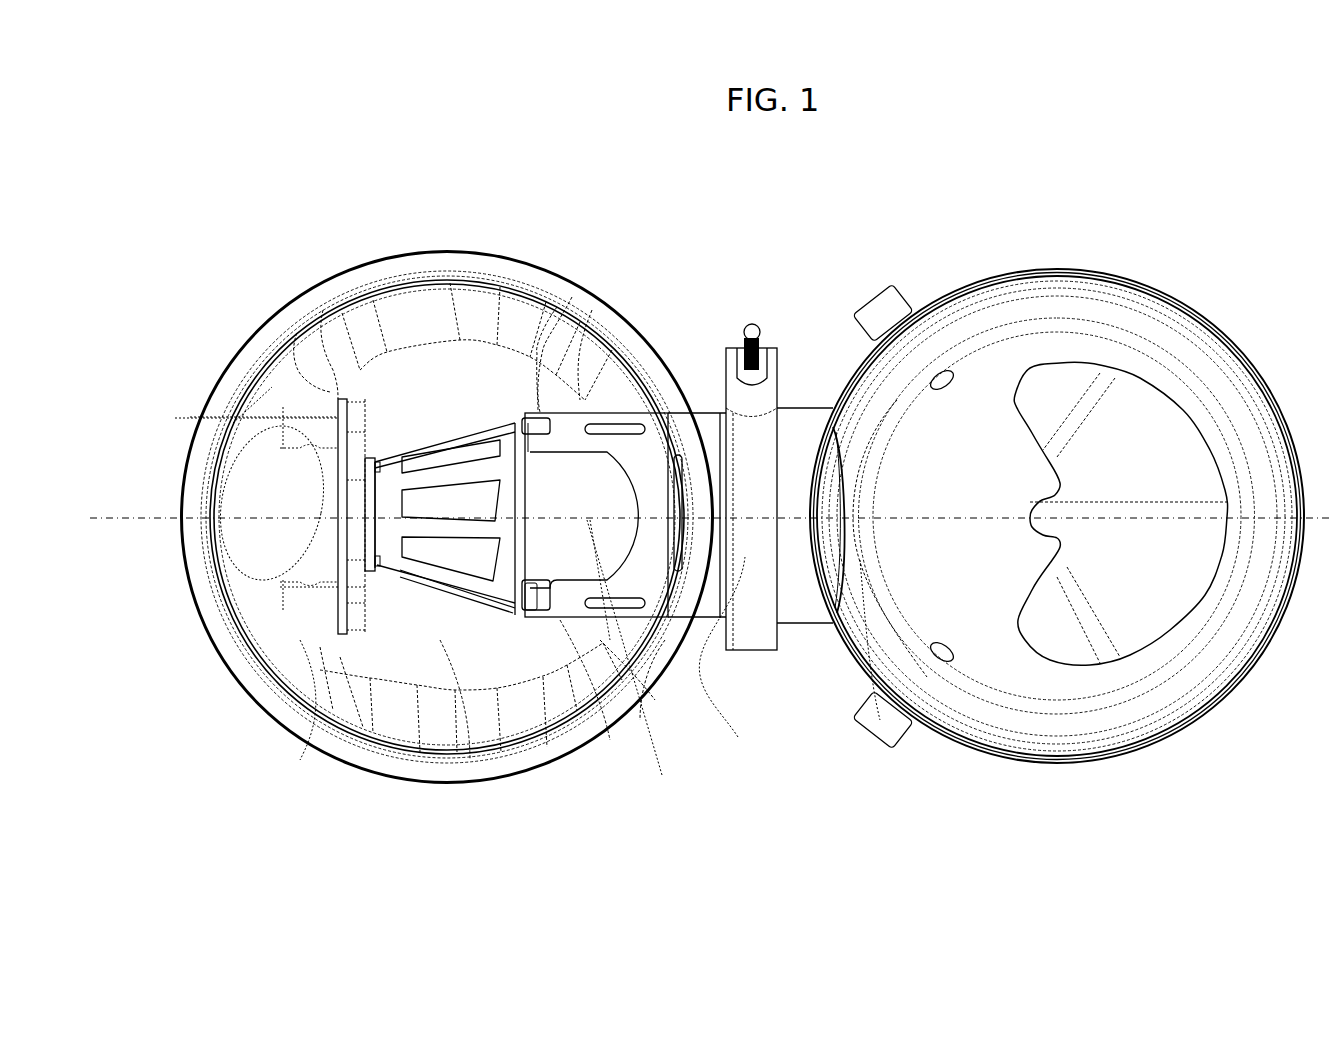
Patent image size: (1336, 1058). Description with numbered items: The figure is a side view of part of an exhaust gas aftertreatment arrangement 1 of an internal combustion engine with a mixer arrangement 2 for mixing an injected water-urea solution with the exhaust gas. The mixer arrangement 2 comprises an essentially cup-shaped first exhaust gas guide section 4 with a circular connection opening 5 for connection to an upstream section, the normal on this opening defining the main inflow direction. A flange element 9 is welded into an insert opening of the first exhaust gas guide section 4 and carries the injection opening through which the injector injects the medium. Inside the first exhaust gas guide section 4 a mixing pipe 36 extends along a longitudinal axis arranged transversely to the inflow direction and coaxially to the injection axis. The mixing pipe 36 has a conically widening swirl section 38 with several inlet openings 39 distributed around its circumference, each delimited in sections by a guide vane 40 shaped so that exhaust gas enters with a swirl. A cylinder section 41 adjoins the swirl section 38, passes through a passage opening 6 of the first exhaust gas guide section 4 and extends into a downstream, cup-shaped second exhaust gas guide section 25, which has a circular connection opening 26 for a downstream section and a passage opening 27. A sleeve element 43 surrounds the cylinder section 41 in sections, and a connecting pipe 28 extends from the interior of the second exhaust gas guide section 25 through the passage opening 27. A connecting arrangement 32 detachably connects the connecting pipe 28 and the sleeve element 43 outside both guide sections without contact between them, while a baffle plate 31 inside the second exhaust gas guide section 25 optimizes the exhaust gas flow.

The exhaust gas aftertreatment arrangement 1 is at (318, 270).
The mixer arrangement 2 is at (662, 271).
The first exhaust gas guide section 4 is at (518, 262).
The connection opening 5 is at (487, 757).
The passage opening 6 is at (677, 576).
The flange element 9 is at (338, 418).
The second exhaust gas guide section 25 is at (1023, 273).
The connection opening 26 is at (1122, 732).
The passage opening 27 is at (836, 425).
The connecting pipe 28 is at (798, 606).
The baffle plate 31 is at (1140, 282).
The connecting arrangement 32 is at (747, 317).
The mixing pipe 36 is at (502, 644).
The swirl section 38 is at (376, 584).
The inlet openings 39 is at (432, 614).
The guide vane 40 is at (451, 510).
The cylinder section 41 is at (572, 297).
The sleeve element 43 is at (556, 492).